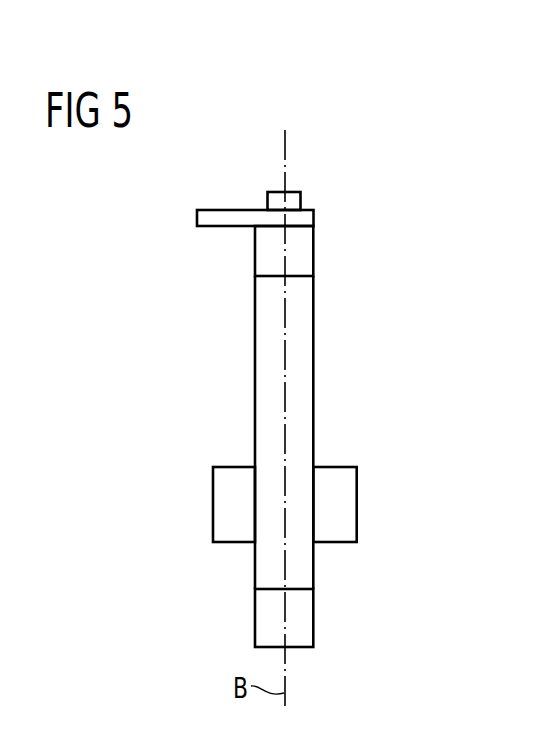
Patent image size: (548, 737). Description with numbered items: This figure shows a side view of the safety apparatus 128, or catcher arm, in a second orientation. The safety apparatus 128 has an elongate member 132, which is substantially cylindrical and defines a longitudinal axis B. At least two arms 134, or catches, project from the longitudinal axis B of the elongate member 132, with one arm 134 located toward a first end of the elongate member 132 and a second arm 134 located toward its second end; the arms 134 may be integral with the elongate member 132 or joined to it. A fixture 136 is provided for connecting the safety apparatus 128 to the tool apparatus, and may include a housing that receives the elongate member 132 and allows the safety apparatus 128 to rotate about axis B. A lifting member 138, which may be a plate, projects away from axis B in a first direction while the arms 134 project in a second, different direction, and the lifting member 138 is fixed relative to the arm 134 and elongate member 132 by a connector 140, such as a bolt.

The safety apparatus 128 is at (125, 240).
The elongate member 132 is at (255, 374).
The arm 134 is at (314, 252).
The fixture 136 is at (358, 500).
The lifting member 138 is at (196, 215).
The connector 140 is at (301, 200).